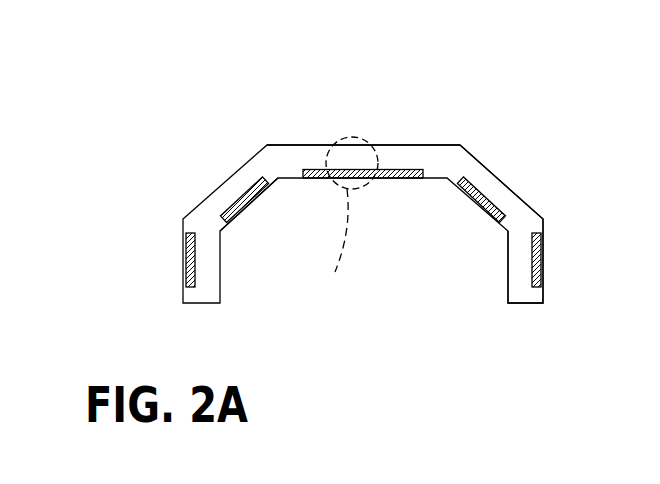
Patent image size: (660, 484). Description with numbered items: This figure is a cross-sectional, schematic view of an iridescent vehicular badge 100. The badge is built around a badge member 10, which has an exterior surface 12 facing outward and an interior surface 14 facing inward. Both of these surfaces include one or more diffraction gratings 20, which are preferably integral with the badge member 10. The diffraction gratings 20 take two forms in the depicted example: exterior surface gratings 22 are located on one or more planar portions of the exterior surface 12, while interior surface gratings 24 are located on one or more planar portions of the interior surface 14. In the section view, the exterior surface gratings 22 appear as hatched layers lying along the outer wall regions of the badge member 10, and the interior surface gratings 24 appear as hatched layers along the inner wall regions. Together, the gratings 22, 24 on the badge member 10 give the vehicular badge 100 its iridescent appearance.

The iridescent vehicular badge 100 is at (360, 186).
The badge member 10 is at (193, 293).
The exterior surface 12 is at (291, 142).
The interior surface 14 is at (278, 186).
The diffraction gratings 20 is at (516, 211).
The exterior surface gratings 22 is at (187, 259).
The interior surface gratings 24 is at (467, 190).